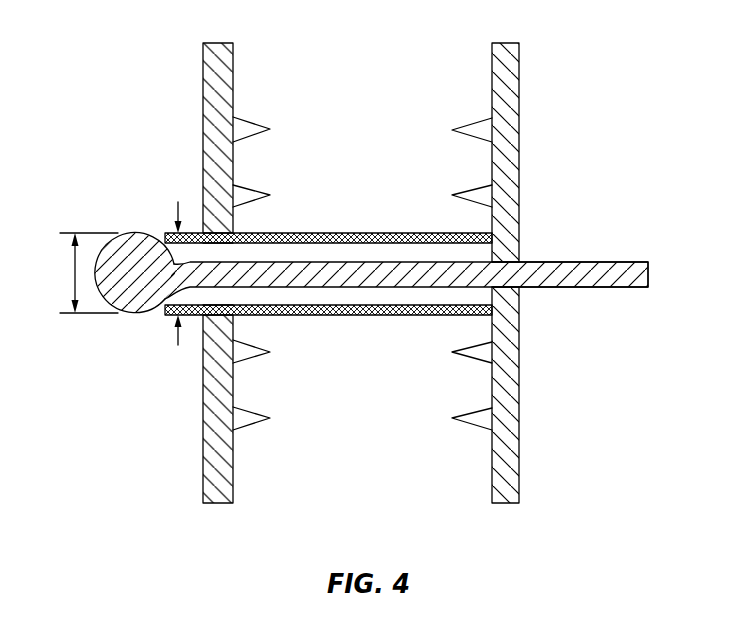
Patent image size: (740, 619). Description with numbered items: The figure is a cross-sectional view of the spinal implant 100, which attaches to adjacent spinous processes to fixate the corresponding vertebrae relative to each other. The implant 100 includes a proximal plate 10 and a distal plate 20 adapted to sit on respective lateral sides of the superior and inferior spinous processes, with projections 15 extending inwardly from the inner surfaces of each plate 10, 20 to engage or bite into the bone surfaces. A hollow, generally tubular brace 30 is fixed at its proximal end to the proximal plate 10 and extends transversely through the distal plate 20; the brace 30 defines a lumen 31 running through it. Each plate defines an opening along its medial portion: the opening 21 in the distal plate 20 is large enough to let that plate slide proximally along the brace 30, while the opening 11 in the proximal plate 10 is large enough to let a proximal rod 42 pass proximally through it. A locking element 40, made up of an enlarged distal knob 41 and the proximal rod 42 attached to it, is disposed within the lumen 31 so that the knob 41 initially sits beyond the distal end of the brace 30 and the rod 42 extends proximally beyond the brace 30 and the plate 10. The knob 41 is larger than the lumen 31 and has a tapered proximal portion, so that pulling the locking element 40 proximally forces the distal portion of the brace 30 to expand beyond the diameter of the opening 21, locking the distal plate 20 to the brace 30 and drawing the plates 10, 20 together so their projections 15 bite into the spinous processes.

The spinal implant 100 is at (102, 84).
The proximal plate 10 is at (508, 97).
The opening 11 is at (508, 253).
The projections 15 is at (252, 125).
The distal plate 20 is at (212, 452).
The opening 21 is at (210, 316).
The brace 30 is at (348, 316).
The lumen 31 is at (342, 253).
The locking element 40 is at (297, 270).
The enlarged distal knob 41 is at (137, 250).
The proximal rod 42 is at (585, 260).